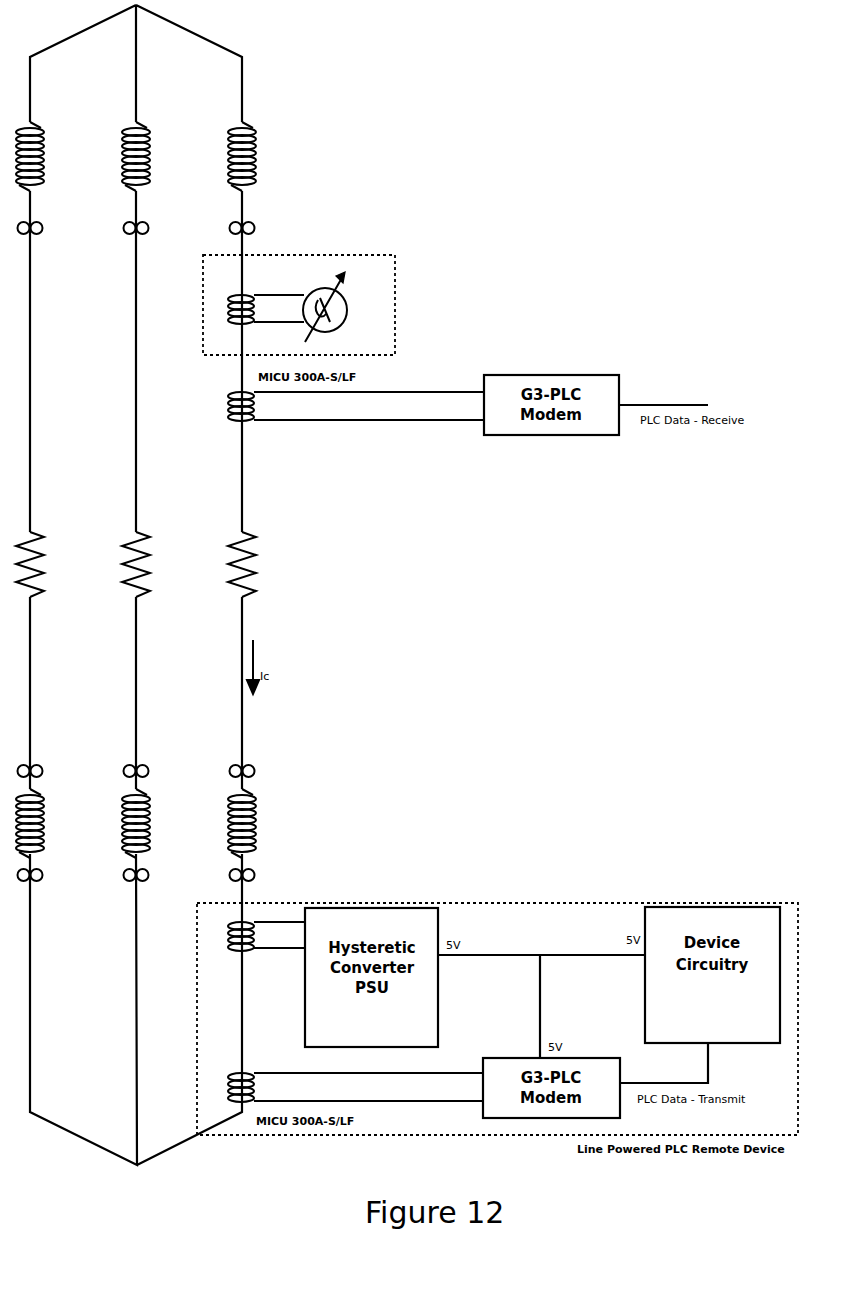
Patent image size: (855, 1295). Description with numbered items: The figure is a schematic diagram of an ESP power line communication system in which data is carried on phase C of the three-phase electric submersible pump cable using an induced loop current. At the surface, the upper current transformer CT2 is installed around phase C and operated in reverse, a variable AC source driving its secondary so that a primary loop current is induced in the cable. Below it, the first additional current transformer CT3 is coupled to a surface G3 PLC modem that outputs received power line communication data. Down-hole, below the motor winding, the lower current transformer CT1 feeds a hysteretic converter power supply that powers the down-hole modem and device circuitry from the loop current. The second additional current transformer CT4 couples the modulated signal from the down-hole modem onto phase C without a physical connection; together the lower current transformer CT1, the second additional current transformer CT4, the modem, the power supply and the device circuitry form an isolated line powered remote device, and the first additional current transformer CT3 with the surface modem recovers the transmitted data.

The lower current transformer CT1 is at (259, 948).
The upper current transformer CT2 is at (299, 305).
The first additional current transformer CT3 is at (347, 419).
The second additional current transformer CT4 is at (348, 1079).